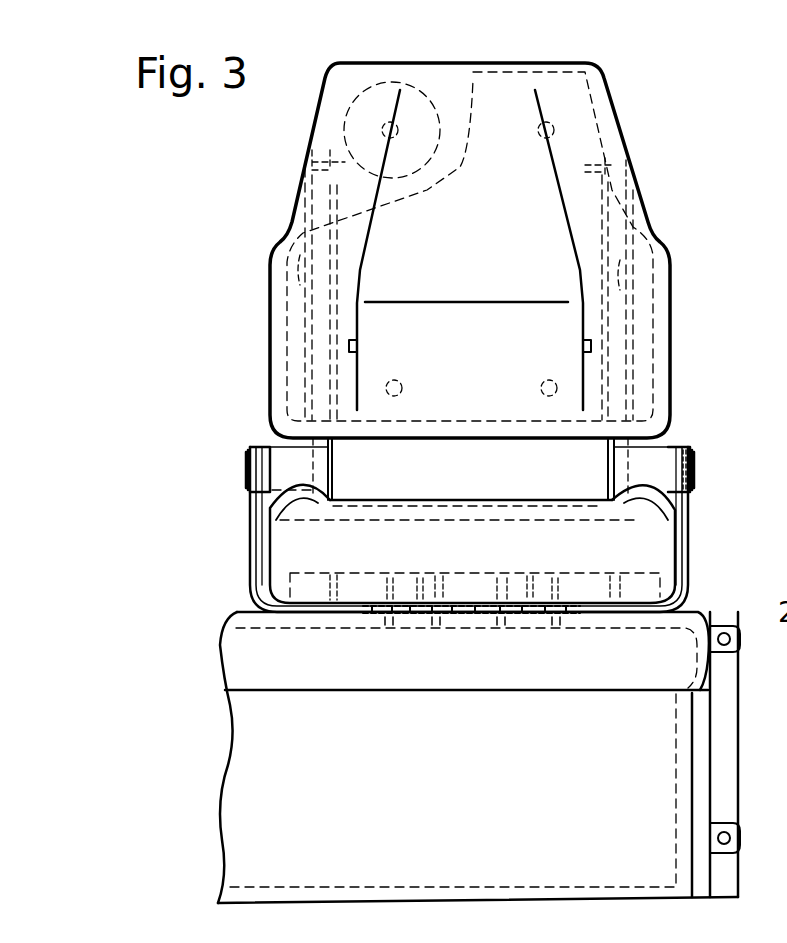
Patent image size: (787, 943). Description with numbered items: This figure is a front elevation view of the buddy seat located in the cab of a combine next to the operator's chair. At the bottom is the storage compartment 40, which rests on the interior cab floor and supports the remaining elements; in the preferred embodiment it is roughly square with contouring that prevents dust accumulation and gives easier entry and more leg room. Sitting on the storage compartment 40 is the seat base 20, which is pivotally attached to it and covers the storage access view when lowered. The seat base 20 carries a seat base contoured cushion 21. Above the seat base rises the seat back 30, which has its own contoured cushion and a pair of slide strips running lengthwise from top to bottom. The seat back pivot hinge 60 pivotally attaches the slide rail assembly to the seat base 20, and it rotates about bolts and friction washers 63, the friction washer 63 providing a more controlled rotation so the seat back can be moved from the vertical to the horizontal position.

The seat base 20 is at (330, 540).
The seat base contoured cushion 21 is at (748, 708).
The seat back 30 is at (615, 150).
The storage compartment 40 is at (320, 752).
The seat back pivot hinge 60 is at (700, 462).
The friction washer 63 is at (682, 450).